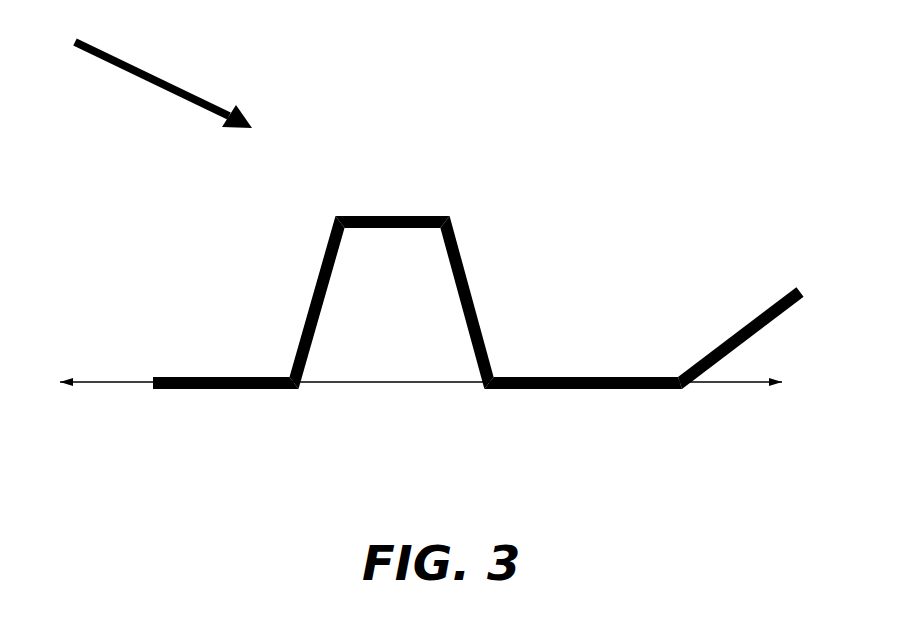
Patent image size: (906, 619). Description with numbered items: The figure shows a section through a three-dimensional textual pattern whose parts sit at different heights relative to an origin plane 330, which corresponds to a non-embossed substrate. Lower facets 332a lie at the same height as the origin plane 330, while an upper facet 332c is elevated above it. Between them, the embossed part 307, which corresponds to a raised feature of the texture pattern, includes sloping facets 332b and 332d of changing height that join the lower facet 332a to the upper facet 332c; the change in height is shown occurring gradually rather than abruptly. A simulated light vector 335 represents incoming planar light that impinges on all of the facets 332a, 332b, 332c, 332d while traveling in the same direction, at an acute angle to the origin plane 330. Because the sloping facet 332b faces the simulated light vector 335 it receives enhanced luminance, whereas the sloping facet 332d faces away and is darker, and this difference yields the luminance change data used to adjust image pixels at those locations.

The simulated light vector 335 is at (203, 96).
The origin plane 330 is at (110, 382).
The lower facet 332a is at (205, 372).
The sloping facet 332b is at (307, 317).
The upper facet 332c is at (385, 217).
The sloping facet 332d is at (478, 315).
The embossed part 307 is at (396, 296).